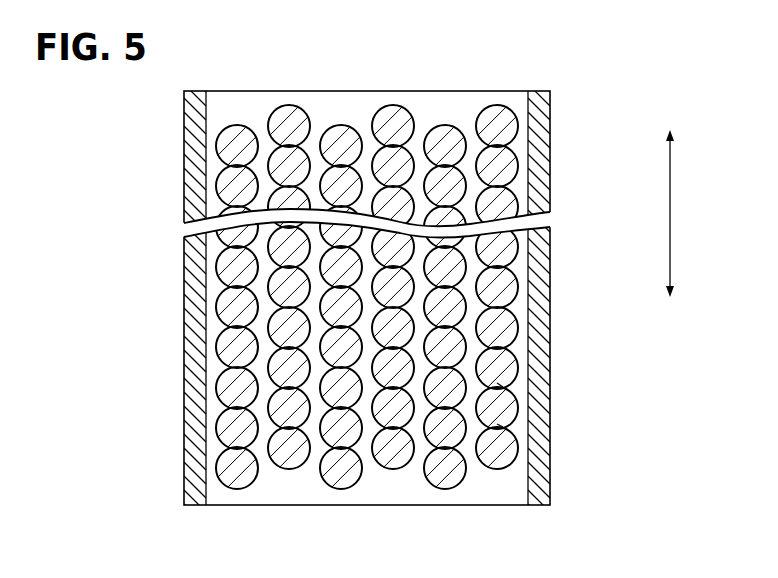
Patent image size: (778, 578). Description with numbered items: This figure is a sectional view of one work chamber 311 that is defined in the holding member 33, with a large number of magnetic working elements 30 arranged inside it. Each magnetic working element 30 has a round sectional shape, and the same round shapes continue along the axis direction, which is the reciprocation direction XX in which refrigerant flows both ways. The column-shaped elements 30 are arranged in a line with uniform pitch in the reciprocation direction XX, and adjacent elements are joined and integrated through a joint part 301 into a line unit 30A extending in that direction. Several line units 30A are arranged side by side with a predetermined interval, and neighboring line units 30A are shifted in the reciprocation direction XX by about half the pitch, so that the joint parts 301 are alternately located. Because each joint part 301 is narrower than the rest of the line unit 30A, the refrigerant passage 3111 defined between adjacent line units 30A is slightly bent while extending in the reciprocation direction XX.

The holding member 33 is at (197, 344).
The work chamber 311 is at (217, 452).
The refrigerant passage 3111 is at (422, 325).
The magnetic working element 30 is at (495, 368).
The joint part 301 is at (502, 387).
The line unit 30A is at (392, 478).
The reciprocation direction XX is at (672, 206).